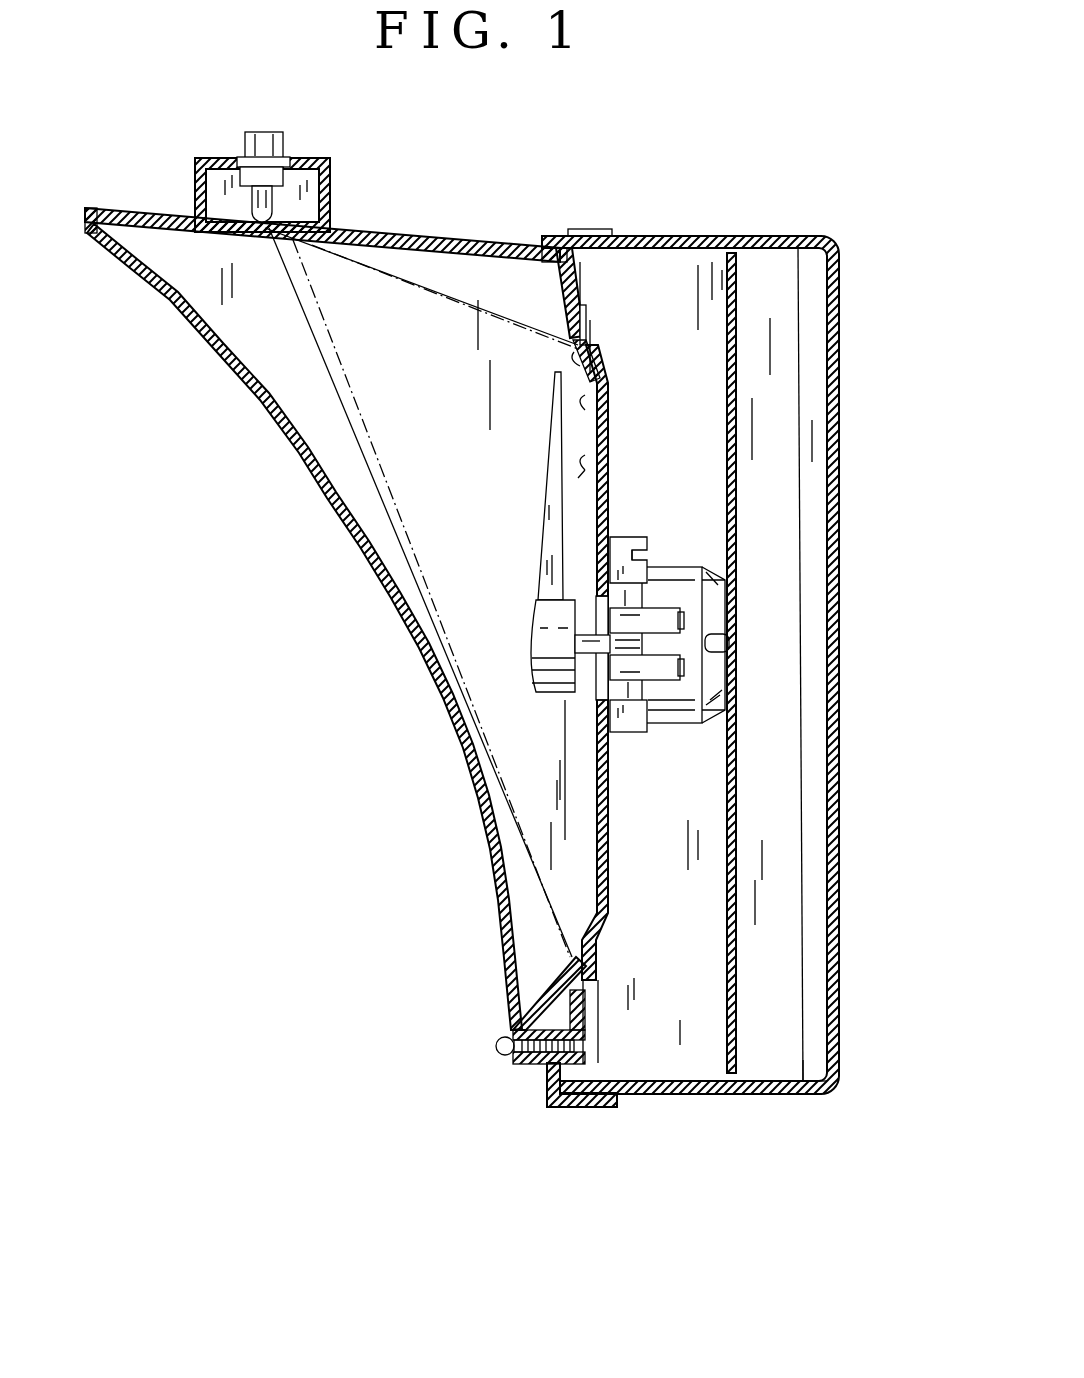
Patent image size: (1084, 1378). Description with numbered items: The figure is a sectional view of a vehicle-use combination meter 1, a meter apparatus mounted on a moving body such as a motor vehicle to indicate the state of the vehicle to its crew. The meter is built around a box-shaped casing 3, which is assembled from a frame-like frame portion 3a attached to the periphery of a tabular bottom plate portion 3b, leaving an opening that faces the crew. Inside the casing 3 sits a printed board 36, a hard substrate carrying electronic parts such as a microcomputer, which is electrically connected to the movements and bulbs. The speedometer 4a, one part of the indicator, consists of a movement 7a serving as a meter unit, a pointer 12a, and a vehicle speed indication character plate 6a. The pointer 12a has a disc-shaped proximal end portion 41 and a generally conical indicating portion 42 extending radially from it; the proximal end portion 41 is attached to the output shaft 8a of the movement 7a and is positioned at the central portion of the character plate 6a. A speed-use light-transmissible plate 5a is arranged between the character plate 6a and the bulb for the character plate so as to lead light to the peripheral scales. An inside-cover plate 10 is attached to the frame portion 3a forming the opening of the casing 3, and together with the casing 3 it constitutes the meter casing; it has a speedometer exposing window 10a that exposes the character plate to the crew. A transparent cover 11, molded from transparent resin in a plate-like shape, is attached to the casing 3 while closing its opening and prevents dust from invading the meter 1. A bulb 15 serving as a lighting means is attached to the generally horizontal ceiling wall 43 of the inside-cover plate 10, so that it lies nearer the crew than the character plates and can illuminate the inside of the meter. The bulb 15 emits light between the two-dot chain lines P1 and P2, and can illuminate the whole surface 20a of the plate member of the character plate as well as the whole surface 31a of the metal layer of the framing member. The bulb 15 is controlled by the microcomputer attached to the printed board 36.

The vehicle-use combination meter 1 is at (688, 142).
The casing 3 is at (850, 1135).
The frame portion 3a is at (793, 1092).
The bottom plate portion 3b is at (823, 1092).
The speedometer 4a is at (728, 1200).
The speed-use light-transmissible plate 5a is at (604, 436).
The vehicle speed indication character plate 6a is at (604, 400).
The movement 7a is at (660, 562).
The output shaft 8a is at (630, 724).
The inside-cover plate 10 is at (463, 236).
The speedometer exposing window 10a is at (588, 345).
The transparent cover 11 is at (322, 473).
The pointer 12a is at (536, 588).
The bulb 15 is at (283, 197).
The surface of the plate member 20a is at (604, 484).
The surface of the metal layer 31a is at (588, 378).
The printed board 36 is at (740, 832).
The proximal end portion 41 is at (552, 683).
The indicating portion 42 is at (548, 552).
The ceiling wall 43 is at (432, 236).
The two-dot chain line P1 is at (348, 378).
The two-dot chain line P2 is at (455, 312).